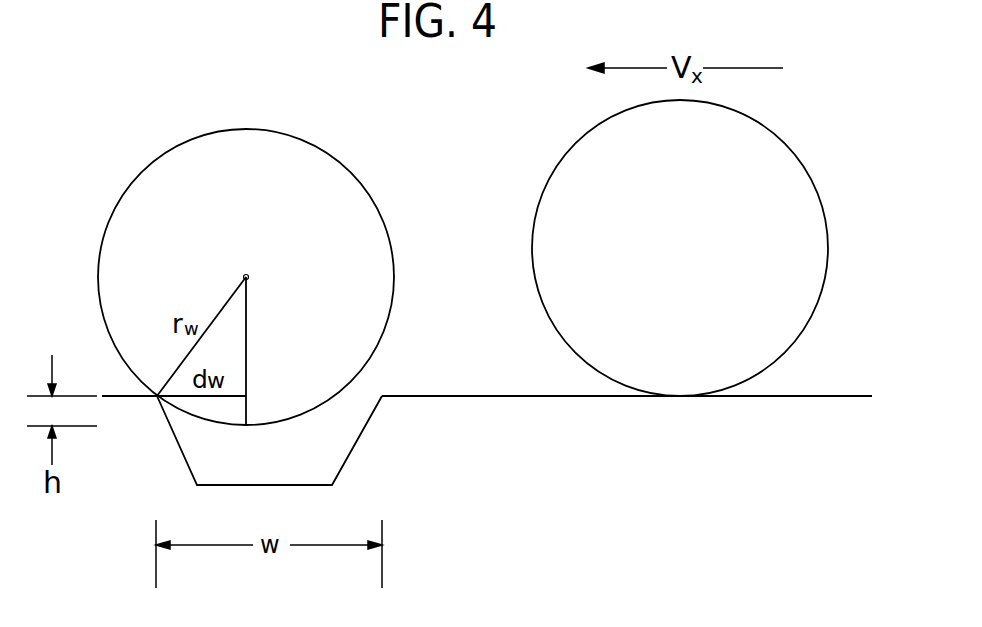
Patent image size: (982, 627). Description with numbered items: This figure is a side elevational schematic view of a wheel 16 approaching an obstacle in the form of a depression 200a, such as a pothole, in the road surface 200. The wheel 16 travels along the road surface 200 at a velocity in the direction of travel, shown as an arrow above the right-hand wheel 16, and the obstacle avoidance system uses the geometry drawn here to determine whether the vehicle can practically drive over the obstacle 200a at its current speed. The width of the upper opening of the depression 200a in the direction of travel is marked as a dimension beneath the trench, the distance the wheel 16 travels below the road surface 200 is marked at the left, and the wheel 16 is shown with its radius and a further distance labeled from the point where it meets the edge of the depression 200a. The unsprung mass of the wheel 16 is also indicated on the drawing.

The wheel 16 is at (834, 171).
The road surface 200 is at (550, 397).
The depression 200a is at (355, 446).